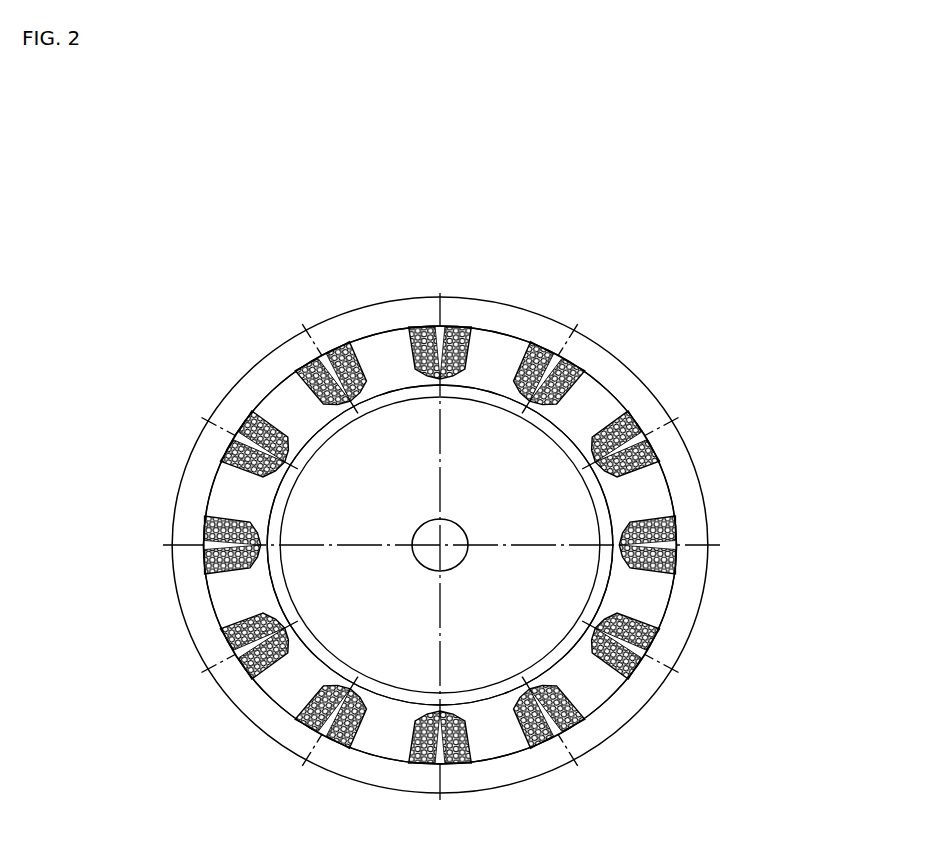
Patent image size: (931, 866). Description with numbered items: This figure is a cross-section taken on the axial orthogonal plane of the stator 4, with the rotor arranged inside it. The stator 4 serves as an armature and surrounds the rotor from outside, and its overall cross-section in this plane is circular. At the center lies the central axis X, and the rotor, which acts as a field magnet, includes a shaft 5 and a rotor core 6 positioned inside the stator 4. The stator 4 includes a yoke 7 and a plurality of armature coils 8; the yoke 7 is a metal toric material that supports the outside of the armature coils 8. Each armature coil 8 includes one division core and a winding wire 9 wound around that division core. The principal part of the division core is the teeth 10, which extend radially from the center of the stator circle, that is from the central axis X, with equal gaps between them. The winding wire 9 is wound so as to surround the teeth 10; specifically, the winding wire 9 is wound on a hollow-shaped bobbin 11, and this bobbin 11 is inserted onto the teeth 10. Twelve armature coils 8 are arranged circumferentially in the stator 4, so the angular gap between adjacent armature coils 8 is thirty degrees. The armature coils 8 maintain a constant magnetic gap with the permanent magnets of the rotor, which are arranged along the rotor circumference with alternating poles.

The stator 4 is at (652, 355).
The shaft 5 is at (418, 562).
The rotor core 6 is at (615, 497).
The yoke 7 is at (267, 375).
The armature coil 8 is at (385, 333).
The winding wire 9 is at (418, 327).
The teeth 10 is at (382, 377).
The bobbin 11 is at (340, 343).
The central axis X is at (442, 547).